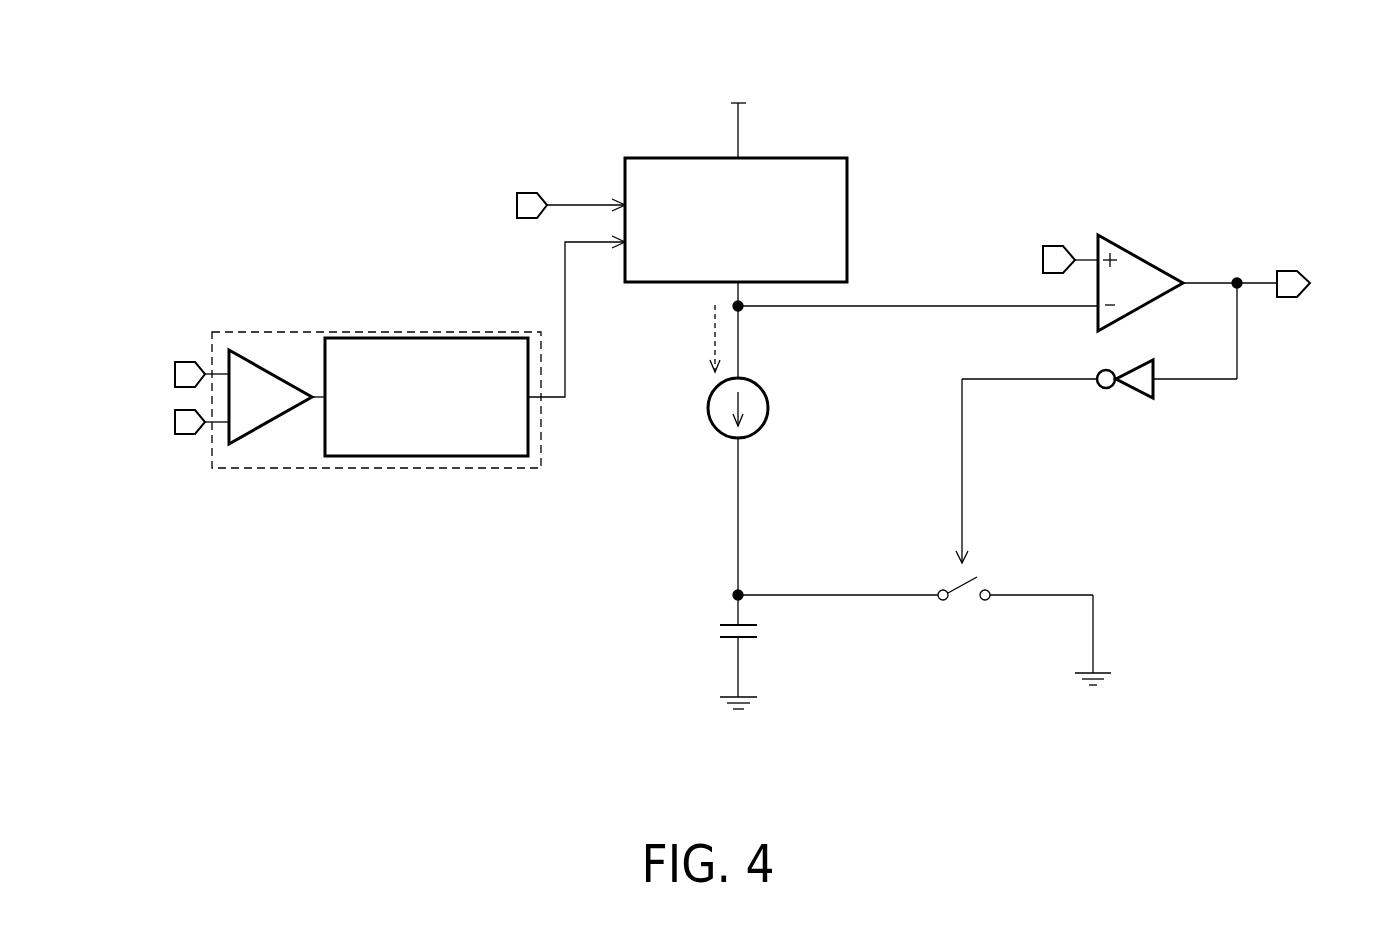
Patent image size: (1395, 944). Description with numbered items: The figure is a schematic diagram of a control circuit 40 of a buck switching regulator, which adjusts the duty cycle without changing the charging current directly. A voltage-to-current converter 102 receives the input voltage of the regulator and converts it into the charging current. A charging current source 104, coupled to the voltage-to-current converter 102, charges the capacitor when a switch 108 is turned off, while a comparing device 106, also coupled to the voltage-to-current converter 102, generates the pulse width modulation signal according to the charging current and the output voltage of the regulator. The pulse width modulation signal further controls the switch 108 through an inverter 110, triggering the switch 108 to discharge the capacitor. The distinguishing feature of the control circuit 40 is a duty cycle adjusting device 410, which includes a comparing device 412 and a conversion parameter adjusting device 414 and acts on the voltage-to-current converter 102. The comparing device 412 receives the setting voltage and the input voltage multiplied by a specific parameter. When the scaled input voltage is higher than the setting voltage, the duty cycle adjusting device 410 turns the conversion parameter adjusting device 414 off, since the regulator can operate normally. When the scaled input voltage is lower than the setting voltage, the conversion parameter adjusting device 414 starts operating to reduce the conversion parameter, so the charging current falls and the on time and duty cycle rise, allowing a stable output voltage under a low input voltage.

The control circuit 40 is at (1288, 95).
The voltage-to-current converter 102 is at (817, 156).
The charging current source 104 is at (770, 407).
The comparing device 106 is at (1137, 250).
The switch 108 is at (958, 606).
The inverter 110 is at (1138, 398).
The duty cycle adjusting device 410 is at (337, 470).
The comparing device 412 is at (268, 347).
The conversion parameter adjusting device 414 is at (435, 458).